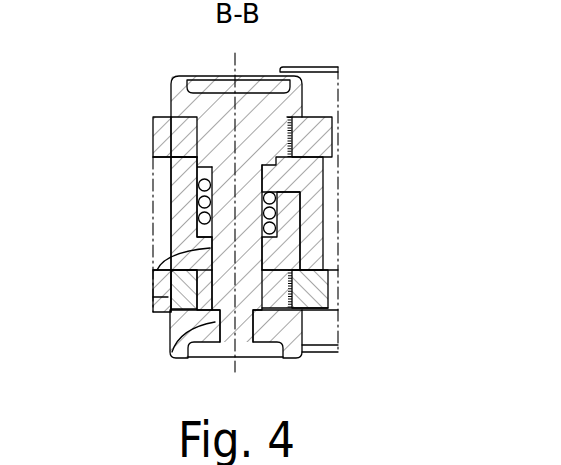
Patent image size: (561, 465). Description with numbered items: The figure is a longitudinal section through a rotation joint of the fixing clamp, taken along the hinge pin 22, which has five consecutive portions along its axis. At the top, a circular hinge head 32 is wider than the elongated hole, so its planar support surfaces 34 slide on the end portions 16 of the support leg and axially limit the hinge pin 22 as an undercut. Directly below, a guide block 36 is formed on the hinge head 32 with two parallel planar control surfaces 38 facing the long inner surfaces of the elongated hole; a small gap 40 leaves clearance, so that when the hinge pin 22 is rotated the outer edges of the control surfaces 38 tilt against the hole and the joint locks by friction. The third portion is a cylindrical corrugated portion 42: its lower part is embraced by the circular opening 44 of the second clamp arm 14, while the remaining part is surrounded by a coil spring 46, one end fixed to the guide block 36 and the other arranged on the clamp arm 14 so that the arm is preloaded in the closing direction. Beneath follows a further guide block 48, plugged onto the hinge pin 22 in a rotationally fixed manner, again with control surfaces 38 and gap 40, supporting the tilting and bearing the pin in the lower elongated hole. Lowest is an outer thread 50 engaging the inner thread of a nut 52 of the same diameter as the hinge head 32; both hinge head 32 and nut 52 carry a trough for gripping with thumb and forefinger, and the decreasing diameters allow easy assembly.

The second clamp arm 14 is at (150, 248).
The end portions 16 is at (308, 147).
The hinge pin 22 is at (276, 104).
The hinge head 32 is at (178, 88).
The planar support surfaces 34 is at (178, 128).
The guide block 36 is at (208, 147).
The control surfaces 38 is at (200, 138).
The gap 40 is at (300, 158).
The corrugated portion 42 is at (262, 247).
The circular opening 44 is at (150, 288).
The coil spring 46 is at (197, 201).
The further guide block 48 is at (312, 302).
The outer thread 50 is at (172, 352).
The nut 52 is at (285, 326).